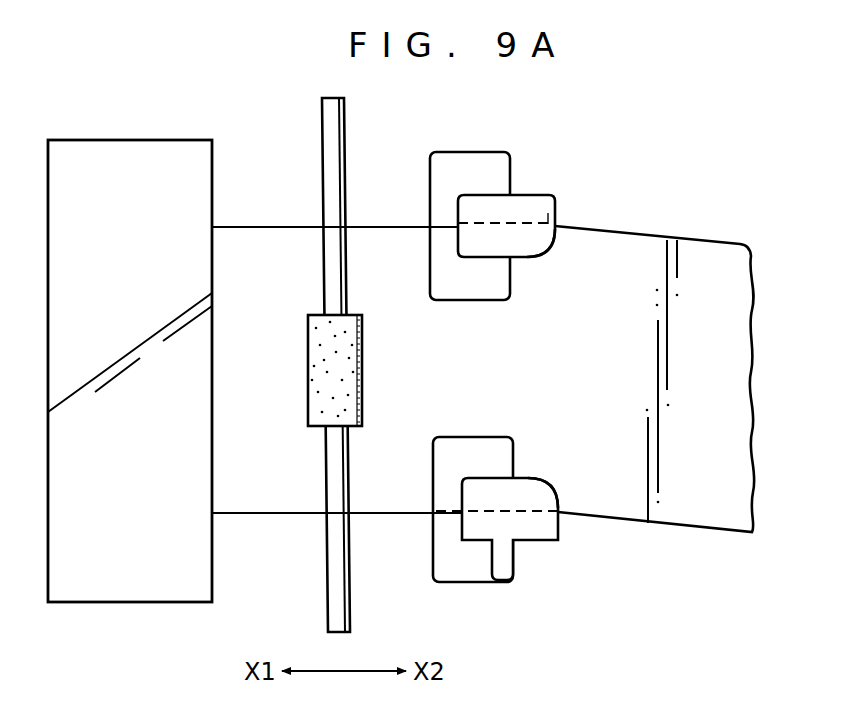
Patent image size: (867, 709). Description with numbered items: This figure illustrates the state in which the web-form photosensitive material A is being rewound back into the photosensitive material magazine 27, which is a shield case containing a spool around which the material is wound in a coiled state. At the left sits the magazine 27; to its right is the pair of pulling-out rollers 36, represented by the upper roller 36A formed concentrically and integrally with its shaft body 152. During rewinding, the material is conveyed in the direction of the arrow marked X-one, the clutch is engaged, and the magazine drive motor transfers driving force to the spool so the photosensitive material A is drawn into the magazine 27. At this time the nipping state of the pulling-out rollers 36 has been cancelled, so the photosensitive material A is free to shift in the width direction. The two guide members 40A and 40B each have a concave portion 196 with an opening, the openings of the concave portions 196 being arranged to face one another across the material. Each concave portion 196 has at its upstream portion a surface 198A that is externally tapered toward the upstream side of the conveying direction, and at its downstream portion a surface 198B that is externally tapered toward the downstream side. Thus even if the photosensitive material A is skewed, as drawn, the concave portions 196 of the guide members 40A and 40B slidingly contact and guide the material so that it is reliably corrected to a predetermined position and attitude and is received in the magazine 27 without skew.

The photosensitive material magazine 27 is at (157, 155).
The shaft body 152 is at (343, 145).
The pair of pulling-out rollers 36 is at (366, 361).
The upper roller 36A is at (350, 407).
The guide member 40B is at (545, 187).
The guide member 40A is at (531, 546).
The concave portion 196 is at (518, 224).
The surface 198A is at (458, 222).
The surface 198B is at (553, 224).
The photosensitive material A is at (655, 233).